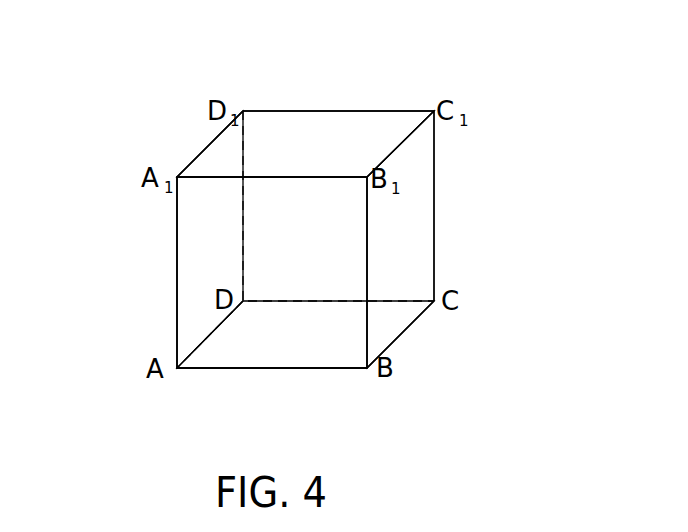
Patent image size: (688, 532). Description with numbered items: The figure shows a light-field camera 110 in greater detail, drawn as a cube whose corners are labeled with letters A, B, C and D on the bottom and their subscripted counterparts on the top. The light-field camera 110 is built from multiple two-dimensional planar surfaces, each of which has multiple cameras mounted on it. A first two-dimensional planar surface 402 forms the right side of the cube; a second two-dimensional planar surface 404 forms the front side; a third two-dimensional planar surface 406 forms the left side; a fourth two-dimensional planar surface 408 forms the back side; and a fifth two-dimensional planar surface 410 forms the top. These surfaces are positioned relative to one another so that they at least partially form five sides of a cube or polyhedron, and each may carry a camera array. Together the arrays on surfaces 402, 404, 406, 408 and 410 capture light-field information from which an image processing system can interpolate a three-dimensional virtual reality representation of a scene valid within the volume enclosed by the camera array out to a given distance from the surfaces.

The light-field camera 110 is at (177, 268).
The first two-dimensional planar surface 402 is at (397, 242).
The second two-dimensional planar surface 404 is at (285, 330).
The third two-dimensional planar surface 406 is at (210, 239).
The fourth two-dimensional planar surface 408 is at (340, 236).
The fifth two-dimensional planar surface 410 is at (293, 152).